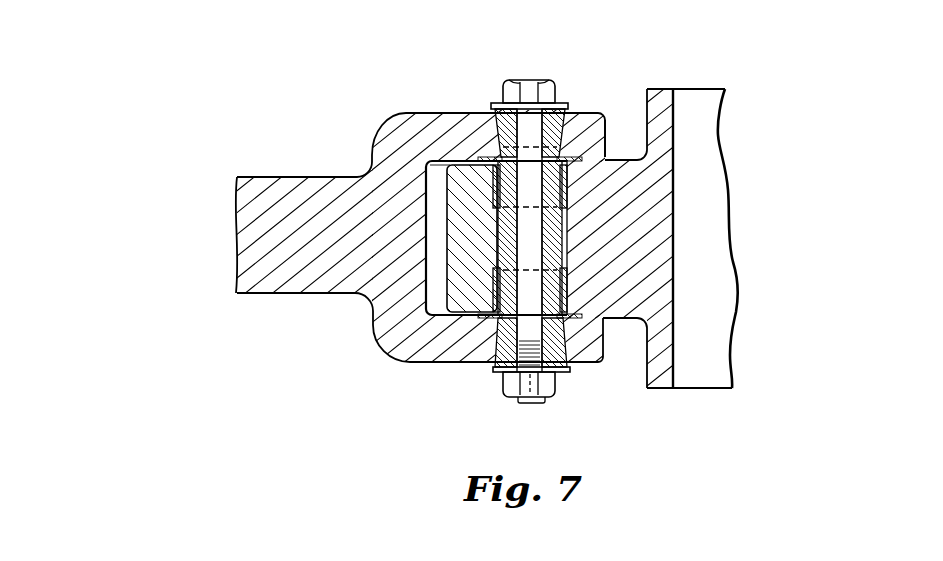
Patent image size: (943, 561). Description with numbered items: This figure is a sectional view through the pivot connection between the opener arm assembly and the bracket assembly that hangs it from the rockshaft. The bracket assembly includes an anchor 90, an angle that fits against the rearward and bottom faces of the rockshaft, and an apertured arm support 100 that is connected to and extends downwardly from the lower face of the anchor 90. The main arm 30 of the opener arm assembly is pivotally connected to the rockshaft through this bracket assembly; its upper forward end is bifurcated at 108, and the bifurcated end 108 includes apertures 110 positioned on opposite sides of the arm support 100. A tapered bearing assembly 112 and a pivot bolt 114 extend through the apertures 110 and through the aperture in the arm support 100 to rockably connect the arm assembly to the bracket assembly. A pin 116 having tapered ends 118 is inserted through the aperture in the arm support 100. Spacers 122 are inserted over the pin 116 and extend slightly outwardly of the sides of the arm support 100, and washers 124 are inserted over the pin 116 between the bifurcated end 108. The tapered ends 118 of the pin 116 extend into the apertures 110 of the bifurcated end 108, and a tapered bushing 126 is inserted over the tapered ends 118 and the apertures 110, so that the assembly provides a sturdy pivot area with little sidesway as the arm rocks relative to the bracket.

The main arm 30 is at (288, 190).
The anchor 90 is at (710, 89).
The arm support 100 is at (442, 165).
The bifurcated end 108 is at (604, 160).
The apertures 110 is at (492, 104).
The tapered bearing assembly 112 is at (581, 128).
The pivot bolt 114 is at (527, 404).
The pin 116 is at (562, 240).
The tapered ends 118 is at (568, 184).
The spacers 122 is at (482, 290).
The washers 124 is at (634, 157).
The tapered bushing 126 is at (494, 133).